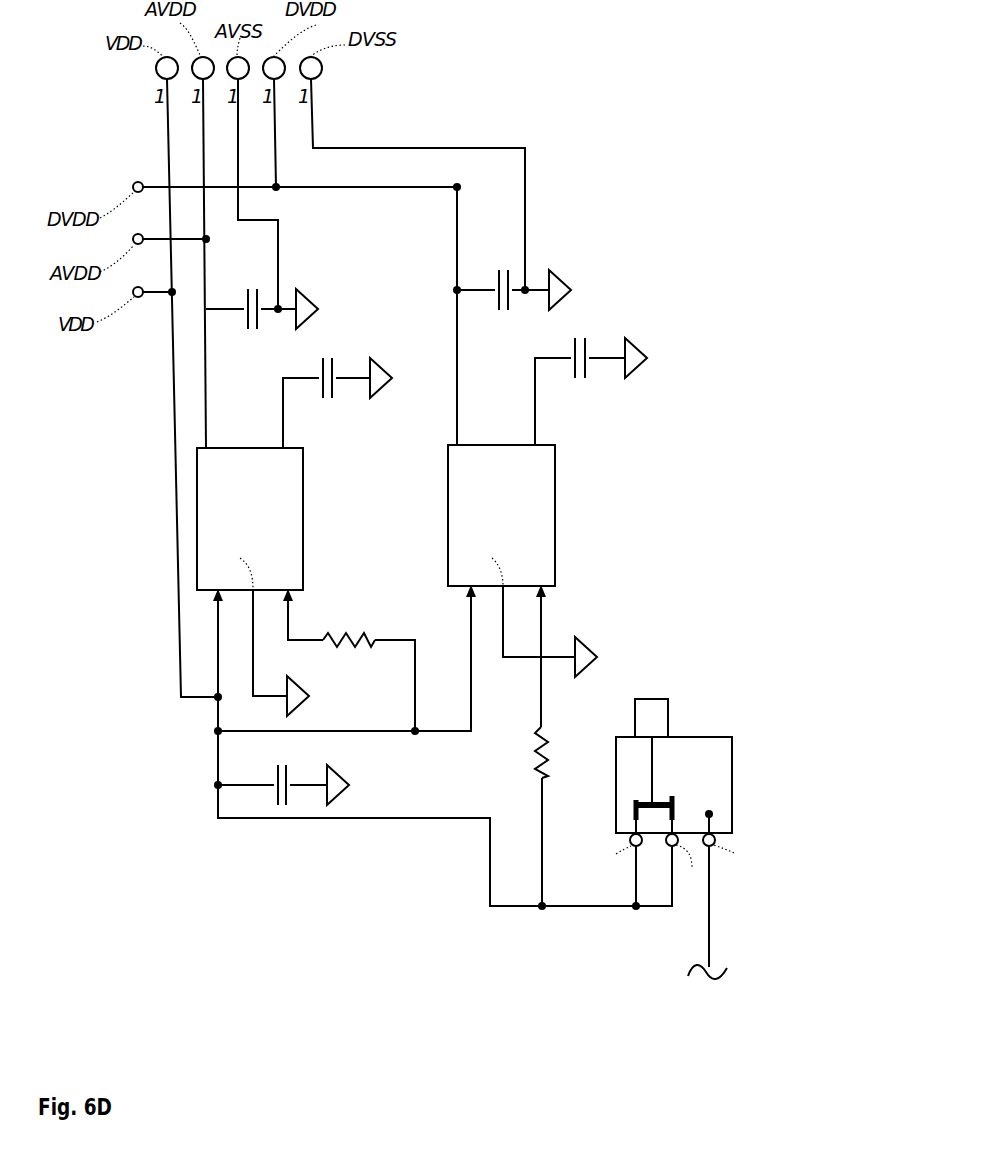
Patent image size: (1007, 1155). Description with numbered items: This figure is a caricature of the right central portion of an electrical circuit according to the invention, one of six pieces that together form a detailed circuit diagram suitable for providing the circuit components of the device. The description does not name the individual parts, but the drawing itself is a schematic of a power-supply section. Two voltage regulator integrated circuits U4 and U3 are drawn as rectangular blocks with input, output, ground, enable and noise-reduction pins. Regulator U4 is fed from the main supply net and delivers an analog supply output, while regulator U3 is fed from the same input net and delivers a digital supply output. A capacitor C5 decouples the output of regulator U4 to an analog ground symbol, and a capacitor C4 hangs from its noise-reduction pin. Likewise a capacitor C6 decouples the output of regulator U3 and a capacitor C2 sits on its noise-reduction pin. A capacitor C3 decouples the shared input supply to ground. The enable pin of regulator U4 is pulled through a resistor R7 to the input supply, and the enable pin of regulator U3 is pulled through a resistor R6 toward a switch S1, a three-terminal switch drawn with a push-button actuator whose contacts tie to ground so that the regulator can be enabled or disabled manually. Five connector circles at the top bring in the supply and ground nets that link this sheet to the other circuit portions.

The voltage regulator TPS793285DBVR U4 is at (197, 523).
The voltage regulator TPS79318DBVR U3 is at (555, 512).
The capacitor 2.2uF C5 is at (248, 298).
The capacitor 0.01uF C4 is at (327, 352).
The capacitor 2.2uF C6 is at (501, 262).
The capacitor 0.01uF C2 is at (578, 332).
The capacitor 1.0uF C3 is at (280, 757).
The resistor 1.0K R7 is at (351, 625).
The resistor 1.0K R6 is at (559, 762).
The switch SSSS211603 S1 is at (732, 780).